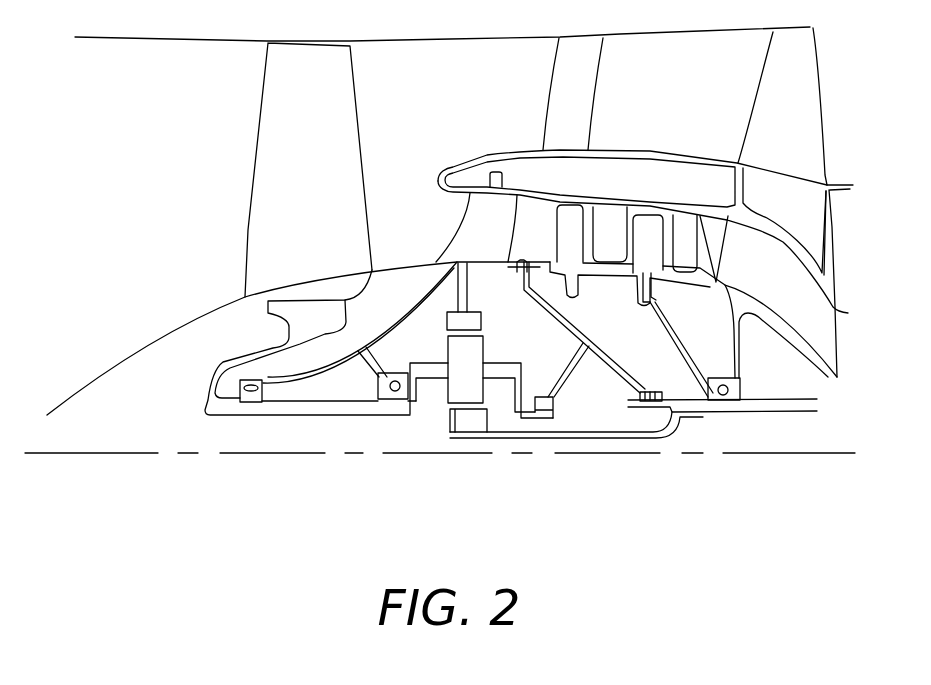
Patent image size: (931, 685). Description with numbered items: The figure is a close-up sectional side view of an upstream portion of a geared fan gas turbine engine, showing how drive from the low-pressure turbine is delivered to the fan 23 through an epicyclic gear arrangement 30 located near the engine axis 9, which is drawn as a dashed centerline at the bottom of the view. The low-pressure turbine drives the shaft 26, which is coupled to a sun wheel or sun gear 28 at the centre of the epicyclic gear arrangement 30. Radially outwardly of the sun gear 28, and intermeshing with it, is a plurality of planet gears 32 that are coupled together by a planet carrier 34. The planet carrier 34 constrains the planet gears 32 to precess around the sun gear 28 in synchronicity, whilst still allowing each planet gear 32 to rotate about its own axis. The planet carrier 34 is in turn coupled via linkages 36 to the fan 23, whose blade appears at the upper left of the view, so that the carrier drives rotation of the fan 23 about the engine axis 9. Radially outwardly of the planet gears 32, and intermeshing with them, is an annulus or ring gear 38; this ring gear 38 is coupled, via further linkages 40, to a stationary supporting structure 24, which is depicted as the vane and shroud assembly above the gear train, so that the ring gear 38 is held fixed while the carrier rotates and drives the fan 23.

The engine axis 9 is at (139, 455).
The fan 23 is at (285, 172).
The stationary supporting structure 24 is at (470, 220).
The shaft 26 is at (713, 413).
The sun gear 28 is at (468, 422).
The epicyclic gear arrangement 30 is at (433, 405).
The planet gears 32 is at (457, 395).
The planet carrier 34 is at (517, 392).
The linkages 36 is at (428, 398).
The ring gear 38 is at (472, 322).
The linkages 40 is at (467, 292).